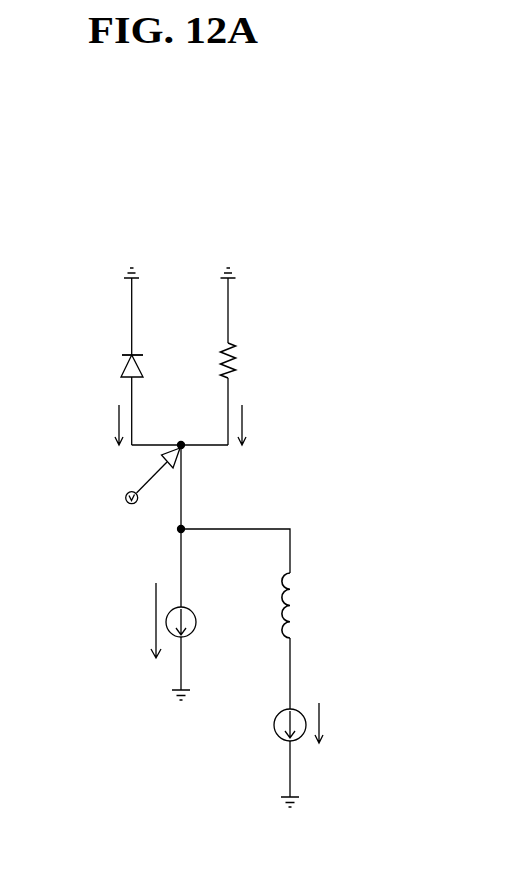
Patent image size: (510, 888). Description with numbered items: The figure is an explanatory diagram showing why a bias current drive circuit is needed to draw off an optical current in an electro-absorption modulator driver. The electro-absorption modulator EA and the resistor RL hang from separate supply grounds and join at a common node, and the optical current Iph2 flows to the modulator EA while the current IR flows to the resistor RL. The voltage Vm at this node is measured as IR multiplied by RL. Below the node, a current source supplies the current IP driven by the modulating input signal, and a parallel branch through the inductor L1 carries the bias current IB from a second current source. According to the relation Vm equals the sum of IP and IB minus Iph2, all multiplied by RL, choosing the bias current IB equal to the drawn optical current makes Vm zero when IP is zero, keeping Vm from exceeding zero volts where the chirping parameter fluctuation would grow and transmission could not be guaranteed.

The electro-absorption modulator EA is at (120, 361).
The resistor RL is at (247, 361).
The optical current Iph2 is at (94, 425).
The current flowing to resistor RL IR is at (257, 425).
The modulator voltage Vm is at (140, 491).
The current driven by modulating signal IP is at (162, 636).
The inductor L1 is at (300, 641).
The bias current IB is at (314, 750).